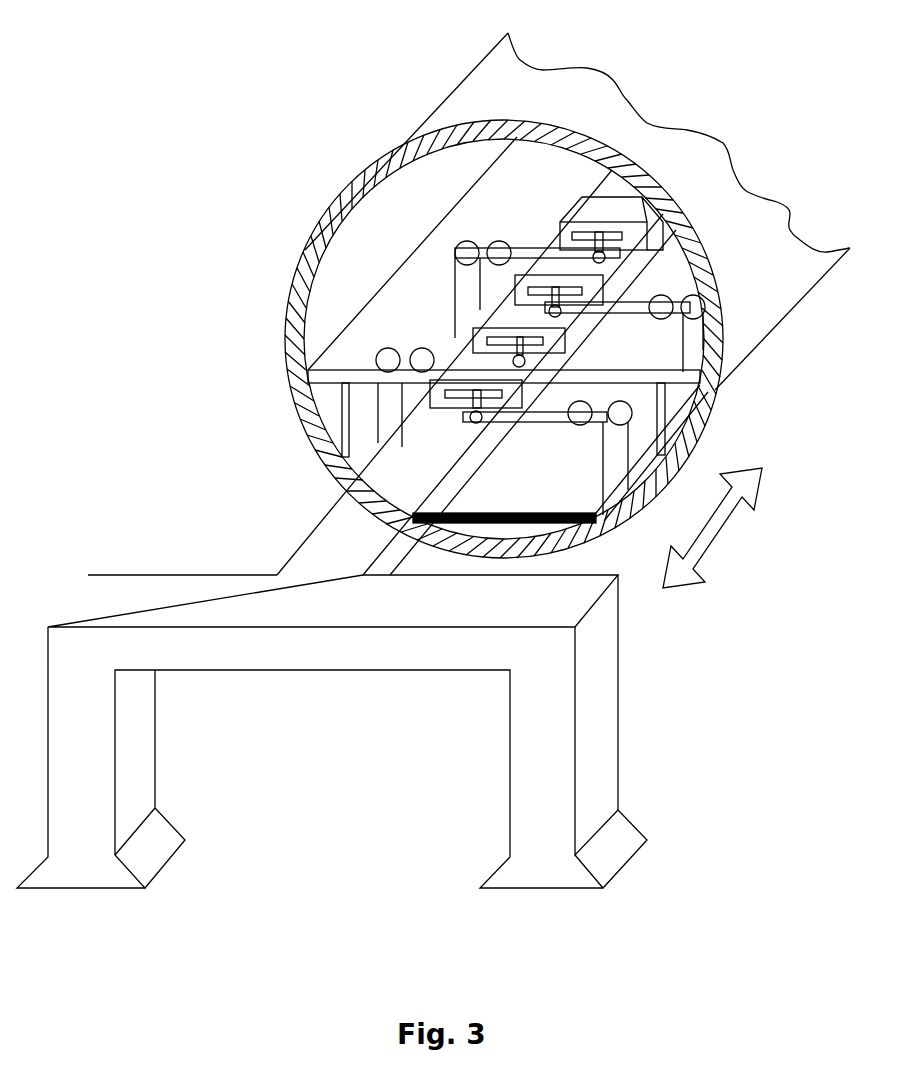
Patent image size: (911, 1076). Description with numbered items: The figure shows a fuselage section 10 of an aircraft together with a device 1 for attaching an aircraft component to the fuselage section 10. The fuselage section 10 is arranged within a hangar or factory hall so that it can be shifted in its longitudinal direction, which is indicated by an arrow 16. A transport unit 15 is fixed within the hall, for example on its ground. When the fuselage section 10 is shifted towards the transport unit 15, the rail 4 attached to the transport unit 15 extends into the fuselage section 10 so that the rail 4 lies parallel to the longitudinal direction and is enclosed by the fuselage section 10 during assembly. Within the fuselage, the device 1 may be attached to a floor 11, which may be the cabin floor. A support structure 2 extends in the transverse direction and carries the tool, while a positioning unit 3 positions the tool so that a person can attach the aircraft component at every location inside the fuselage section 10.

The device 1 is at (556, 356).
The support structure 2 is at (548, 427).
The positioning unit 3 is at (530, 416).
The rail 4 is at (461, 427).
The fuselage section 10 is at (373, 121).
The floor 11 is at (350, 400).
The transport unit 15 is at (182, 585).
The arrow 16 is at (710, 535).